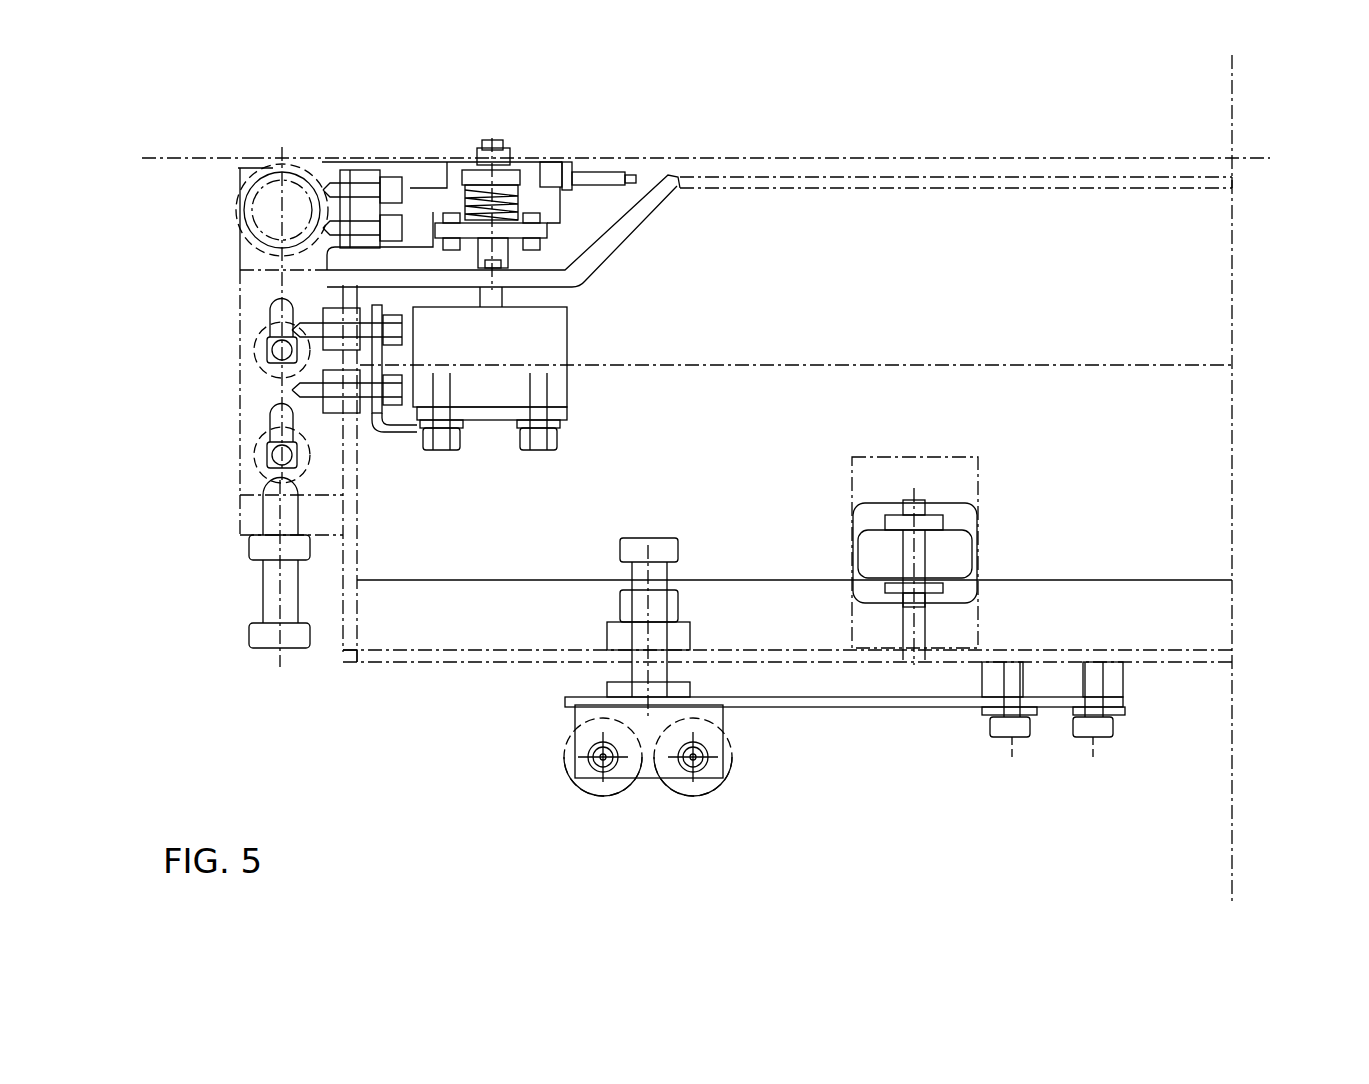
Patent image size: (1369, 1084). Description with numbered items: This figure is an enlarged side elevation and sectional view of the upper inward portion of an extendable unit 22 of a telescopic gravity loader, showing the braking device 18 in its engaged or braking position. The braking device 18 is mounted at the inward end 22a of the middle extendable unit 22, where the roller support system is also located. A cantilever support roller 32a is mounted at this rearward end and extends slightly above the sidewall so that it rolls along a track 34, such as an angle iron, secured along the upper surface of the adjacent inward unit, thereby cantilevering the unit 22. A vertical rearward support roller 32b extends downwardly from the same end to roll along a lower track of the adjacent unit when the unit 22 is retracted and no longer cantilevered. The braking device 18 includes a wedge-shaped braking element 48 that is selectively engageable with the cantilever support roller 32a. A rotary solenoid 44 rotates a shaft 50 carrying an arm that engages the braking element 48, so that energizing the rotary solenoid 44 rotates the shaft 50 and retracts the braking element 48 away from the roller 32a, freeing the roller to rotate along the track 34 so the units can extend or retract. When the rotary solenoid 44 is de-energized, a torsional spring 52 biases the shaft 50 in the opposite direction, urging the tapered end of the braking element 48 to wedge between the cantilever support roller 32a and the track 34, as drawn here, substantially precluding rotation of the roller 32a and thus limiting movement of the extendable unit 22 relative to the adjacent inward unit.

The braking device 18 is at (644, 296).
The extendable unit 22 is at (1148, 271).
The inward end 22a is at (443, 622).
The cantilever support roller 32a is at (237, 195).
The rearward support roller 32b is at (610, 792).
The track 34 is at (155, 158).
The rotary solenoid 44 is at (555, 385).
The braking element 48 is at (320, 163).
The shaft 50 is at (505, 247).
The torsional spring 52 is at (508, 197).